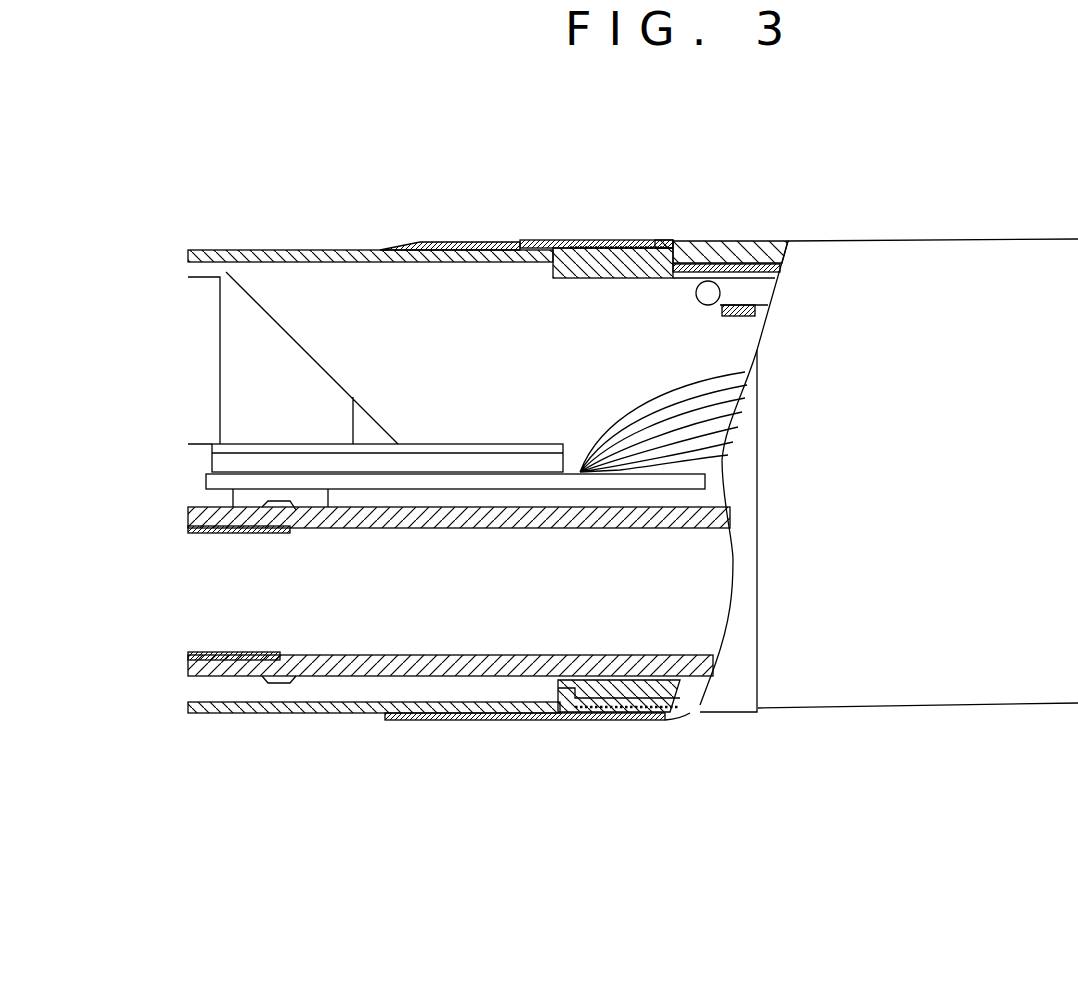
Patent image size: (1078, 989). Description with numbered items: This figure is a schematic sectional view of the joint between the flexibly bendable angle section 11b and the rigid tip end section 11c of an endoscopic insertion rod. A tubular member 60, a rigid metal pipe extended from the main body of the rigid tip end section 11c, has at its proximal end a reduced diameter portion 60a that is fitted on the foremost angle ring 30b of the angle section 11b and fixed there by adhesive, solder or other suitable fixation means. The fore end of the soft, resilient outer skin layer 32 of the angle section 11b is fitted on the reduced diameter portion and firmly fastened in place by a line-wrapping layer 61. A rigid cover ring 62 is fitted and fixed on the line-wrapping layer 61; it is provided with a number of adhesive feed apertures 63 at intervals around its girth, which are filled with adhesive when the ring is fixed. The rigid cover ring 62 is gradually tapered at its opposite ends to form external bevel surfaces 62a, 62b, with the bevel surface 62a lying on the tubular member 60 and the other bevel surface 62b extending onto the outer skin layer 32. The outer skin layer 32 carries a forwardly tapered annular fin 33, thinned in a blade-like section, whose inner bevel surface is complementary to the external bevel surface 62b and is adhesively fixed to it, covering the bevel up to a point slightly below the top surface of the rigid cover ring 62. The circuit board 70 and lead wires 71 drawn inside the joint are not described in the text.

The angle section 11b is at (956, 240).
The rigid tip end section 11c is at (360, 244).
The angle ring 30b is at (748, 264).
The outer resilient skin layer 32 is at (770, 264).
The annular fin 33 is at (655, 240).
The tubular member 60 is at (245, 250).
The reduced diameter portion 60a is at (620, 683).
The line-wrapping layer 61 is at (590, 240).
The rigid cover ring 62 is at (483, 722).
The external bevel surface 62a is at (410, 720).
The external bevel surface 62b is at (660, 720).
The adhesive feed apertures 63 is at (560, 246).
The circuit board 70 is at (430, 460).
The lead wires 71 is at (645, 393).